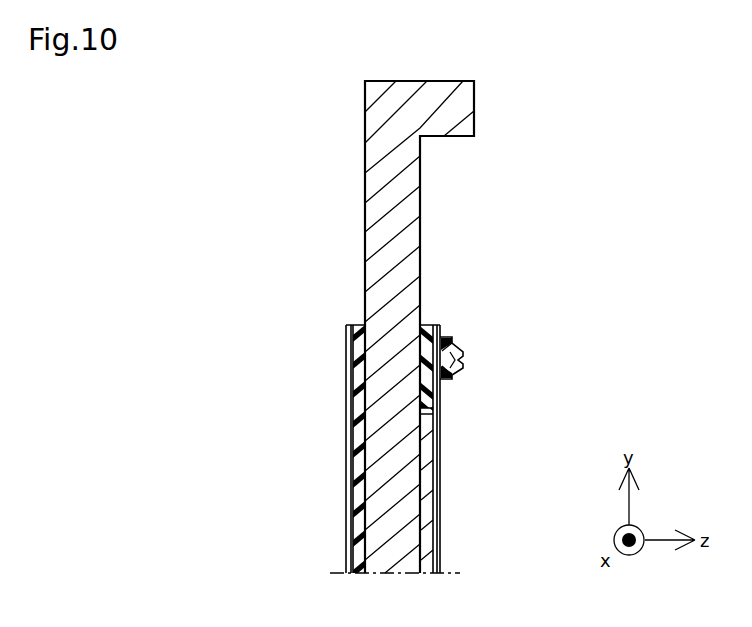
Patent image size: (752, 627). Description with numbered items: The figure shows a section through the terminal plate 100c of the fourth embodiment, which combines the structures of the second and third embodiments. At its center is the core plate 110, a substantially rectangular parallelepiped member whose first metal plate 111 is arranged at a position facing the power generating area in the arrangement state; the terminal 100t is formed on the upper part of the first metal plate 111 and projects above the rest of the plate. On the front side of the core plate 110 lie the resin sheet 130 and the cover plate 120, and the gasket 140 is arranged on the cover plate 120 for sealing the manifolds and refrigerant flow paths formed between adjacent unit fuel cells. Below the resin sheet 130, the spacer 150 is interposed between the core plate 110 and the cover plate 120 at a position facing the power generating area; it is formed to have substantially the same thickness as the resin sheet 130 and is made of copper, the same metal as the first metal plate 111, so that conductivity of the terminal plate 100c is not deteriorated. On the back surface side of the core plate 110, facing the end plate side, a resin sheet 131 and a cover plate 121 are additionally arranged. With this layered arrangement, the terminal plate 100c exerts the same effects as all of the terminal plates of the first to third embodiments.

The terminal plate 100c is at (233, 186).
The terminal 100t is at (474, 102).
The core plate 110 is at (365, 270).
The first metal plate 111 is at (378, 486).
The cover plate 120 is at (437, 510).
The cover plate 121 is at (346, 410).
The resin sheet 130 is at (428, 325).
The resin sheet 131 is at (360, 444).
The gasket 140 is at (454, 377).
The spacer 150 is at (430, 459).